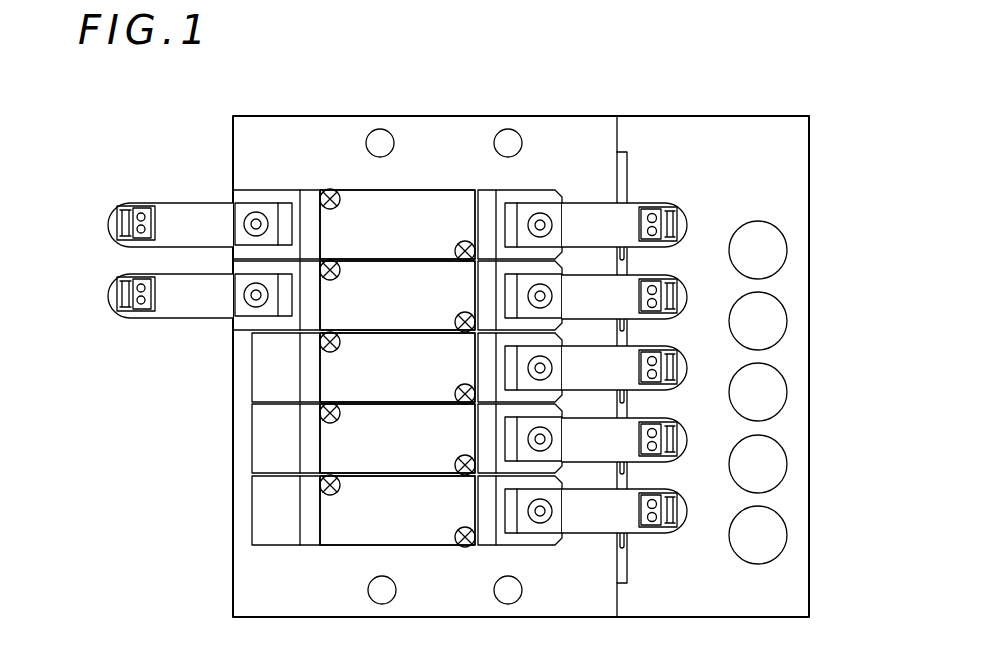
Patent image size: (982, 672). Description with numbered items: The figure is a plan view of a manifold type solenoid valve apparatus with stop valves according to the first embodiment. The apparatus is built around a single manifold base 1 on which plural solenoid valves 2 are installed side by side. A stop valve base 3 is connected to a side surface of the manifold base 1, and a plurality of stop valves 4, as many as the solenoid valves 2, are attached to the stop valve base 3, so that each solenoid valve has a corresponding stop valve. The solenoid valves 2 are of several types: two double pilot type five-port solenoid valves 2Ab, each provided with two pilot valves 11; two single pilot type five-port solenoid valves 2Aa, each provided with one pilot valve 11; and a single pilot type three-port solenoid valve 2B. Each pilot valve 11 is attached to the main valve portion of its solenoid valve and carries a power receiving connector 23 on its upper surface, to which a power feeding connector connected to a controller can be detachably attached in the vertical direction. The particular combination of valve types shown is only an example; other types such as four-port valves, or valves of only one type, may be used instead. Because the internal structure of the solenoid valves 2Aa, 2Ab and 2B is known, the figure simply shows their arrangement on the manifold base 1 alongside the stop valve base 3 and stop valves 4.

The manifold base 1 is at (495, 116).
The solenoid valves 2 is at (412, 190).
The double pilot type 5-port solenoid valve 2Ab is at (418, 242).
The single pilot type 5-port solenoid valve 2Aa is at (418, 385).
The single pilot type 3-port solenoid valve 2B is at (414, 528).
The stop valve base 3 is at (664, 125).
The stop valves 4 is at (790, 248).
The pilot valve 11 is at (190, 225).
The power receiving connector 23 is at (139, 217).